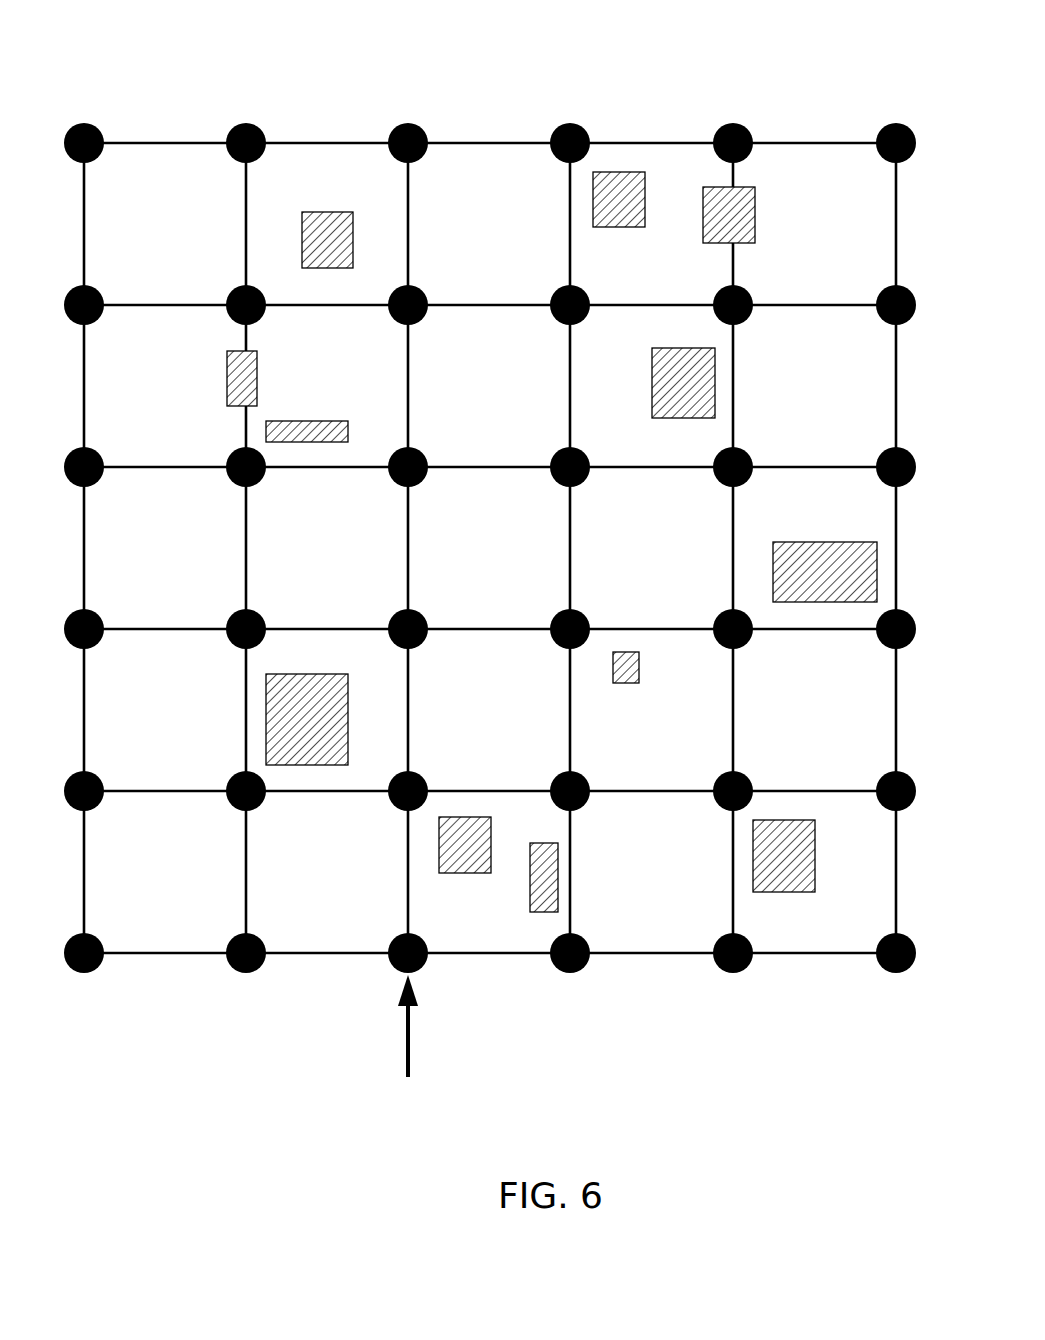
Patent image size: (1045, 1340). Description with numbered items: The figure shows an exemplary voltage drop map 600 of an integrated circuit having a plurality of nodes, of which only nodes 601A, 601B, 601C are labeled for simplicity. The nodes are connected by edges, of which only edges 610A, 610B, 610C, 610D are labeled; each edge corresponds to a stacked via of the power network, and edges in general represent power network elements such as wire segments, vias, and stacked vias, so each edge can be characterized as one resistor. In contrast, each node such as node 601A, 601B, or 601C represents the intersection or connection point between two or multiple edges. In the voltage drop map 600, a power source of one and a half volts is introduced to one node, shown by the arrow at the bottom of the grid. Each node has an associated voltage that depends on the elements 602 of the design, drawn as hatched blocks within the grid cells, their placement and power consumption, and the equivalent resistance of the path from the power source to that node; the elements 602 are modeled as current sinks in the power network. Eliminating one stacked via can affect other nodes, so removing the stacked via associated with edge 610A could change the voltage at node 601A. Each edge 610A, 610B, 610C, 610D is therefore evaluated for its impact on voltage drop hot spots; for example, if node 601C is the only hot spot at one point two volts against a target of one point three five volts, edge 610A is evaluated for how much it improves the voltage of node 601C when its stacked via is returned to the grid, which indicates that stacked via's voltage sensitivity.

The voltage drop map 600 is at (351, 37).
The node 601A is at (748, 455).
The node 601B is at (578, 124).
The node 601C is at (233, 157).
The edge 610A is at (186, 467).
The edge 610B is at (410, 430).
The edge 610C is at (733, 735).
The edge 610D is at (84, 729).
The element 602 is at (349, 712).